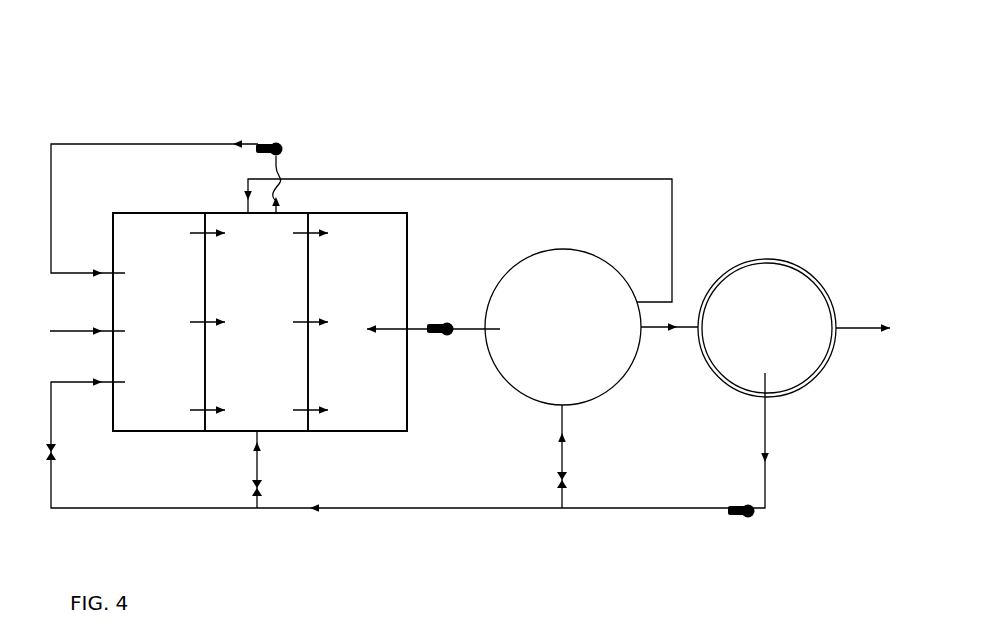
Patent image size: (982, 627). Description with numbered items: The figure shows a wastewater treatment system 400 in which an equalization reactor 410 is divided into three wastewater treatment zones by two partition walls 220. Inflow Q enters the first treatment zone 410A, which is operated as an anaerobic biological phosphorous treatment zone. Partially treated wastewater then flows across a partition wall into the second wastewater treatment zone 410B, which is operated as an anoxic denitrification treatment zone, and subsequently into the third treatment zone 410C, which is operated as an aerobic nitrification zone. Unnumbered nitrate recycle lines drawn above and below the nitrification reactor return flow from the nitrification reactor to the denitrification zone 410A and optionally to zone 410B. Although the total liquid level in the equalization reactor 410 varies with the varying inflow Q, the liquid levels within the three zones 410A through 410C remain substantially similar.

The wastewater treatment system 400 is at (358, 124).
The equalization reactor 410 is at (410, 249).
The first treatment zone 410A is at (159, 322).
The second wastewater treatment zone 410B is at (256, 322).
The third treatment zone 410C is at (357, 322).
The partition walls 220 is at (205, 368).